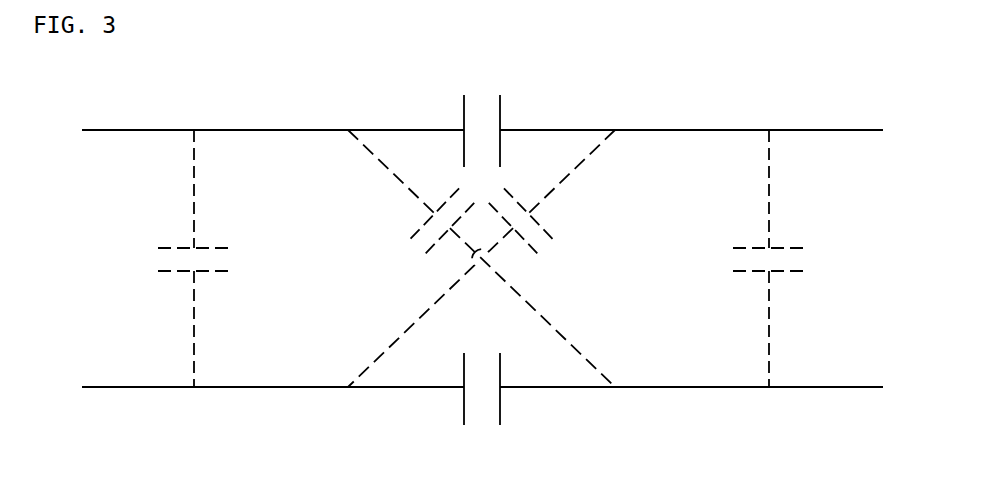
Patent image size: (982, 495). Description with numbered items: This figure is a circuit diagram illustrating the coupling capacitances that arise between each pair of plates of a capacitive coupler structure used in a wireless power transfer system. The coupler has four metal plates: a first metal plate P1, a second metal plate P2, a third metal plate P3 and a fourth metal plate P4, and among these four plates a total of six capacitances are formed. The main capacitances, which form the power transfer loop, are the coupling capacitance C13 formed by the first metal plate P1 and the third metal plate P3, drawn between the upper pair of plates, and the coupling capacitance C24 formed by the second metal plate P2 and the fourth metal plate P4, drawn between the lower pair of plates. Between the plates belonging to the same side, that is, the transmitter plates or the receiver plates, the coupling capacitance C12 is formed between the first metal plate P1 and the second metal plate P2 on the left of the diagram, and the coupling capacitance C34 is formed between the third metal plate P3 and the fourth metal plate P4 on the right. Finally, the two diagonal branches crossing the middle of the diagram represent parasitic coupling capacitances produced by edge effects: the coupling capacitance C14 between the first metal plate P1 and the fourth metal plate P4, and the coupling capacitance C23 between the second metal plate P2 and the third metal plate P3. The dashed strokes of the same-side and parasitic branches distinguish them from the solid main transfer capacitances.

The coupling capacitance between first and second metal plates C12 is at (178, 258).
The coupling capacitance between first and third metal plates C13 is at (483, 118).
The parasitic coupling capacitance between first and fourth metal plates C14 is at (481, 258).
The parasitic coupling capacitance between second and third metal plates C23 is at (481, 258).
The coupling capacitance between second and fourth metal plates C24 is at (483, 403).
The coupling capacitance between third and fourth metal plates C34 is at (789, 258).
The first metal plate P1 is at (273, 116).
The second metal plate P2 is at (273, 404).
The third metal plate P3 is at (691, 116).
The fourth metal plate P4 is at (691, 404).